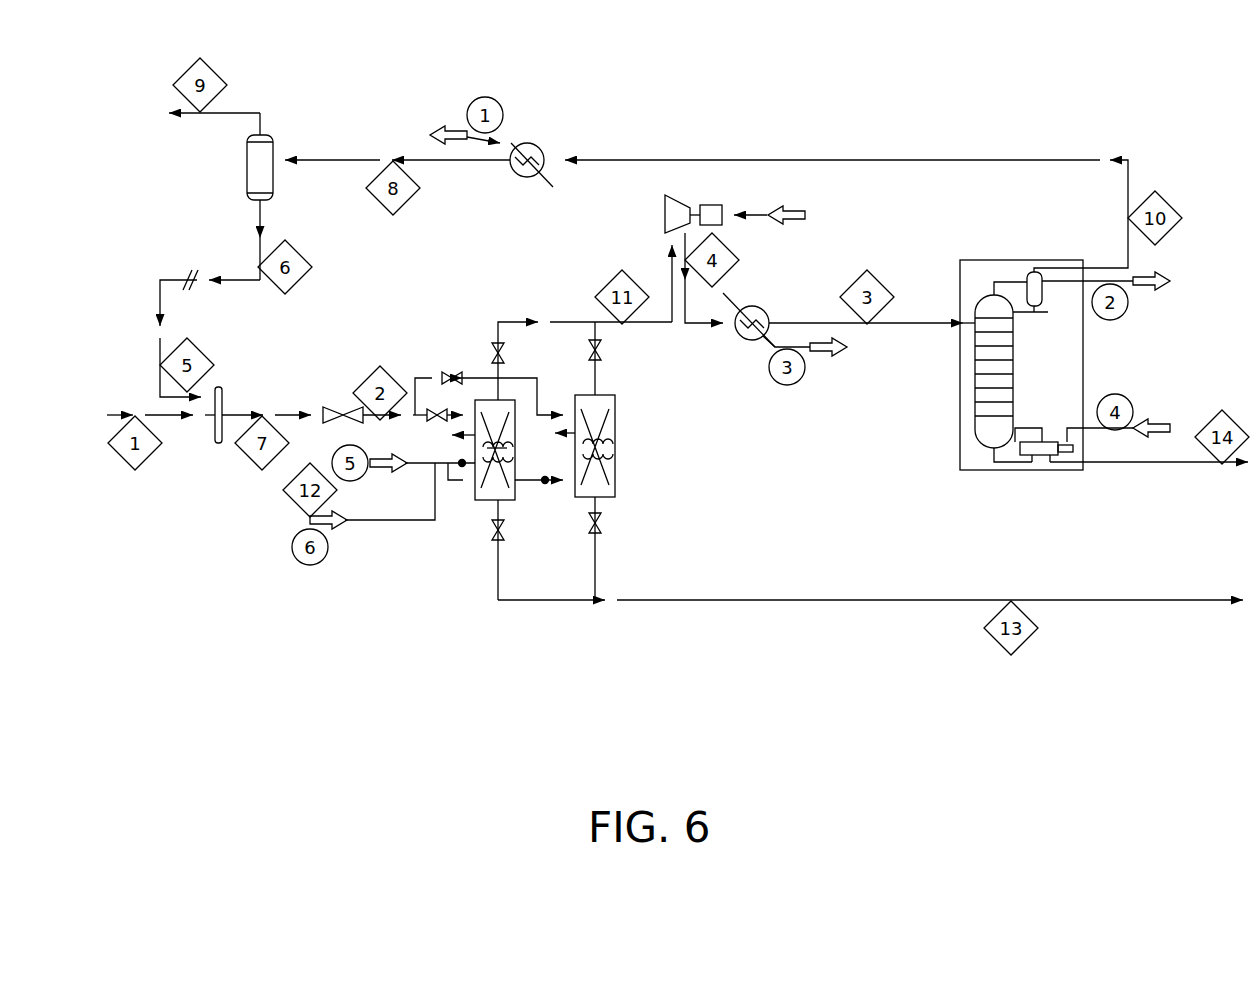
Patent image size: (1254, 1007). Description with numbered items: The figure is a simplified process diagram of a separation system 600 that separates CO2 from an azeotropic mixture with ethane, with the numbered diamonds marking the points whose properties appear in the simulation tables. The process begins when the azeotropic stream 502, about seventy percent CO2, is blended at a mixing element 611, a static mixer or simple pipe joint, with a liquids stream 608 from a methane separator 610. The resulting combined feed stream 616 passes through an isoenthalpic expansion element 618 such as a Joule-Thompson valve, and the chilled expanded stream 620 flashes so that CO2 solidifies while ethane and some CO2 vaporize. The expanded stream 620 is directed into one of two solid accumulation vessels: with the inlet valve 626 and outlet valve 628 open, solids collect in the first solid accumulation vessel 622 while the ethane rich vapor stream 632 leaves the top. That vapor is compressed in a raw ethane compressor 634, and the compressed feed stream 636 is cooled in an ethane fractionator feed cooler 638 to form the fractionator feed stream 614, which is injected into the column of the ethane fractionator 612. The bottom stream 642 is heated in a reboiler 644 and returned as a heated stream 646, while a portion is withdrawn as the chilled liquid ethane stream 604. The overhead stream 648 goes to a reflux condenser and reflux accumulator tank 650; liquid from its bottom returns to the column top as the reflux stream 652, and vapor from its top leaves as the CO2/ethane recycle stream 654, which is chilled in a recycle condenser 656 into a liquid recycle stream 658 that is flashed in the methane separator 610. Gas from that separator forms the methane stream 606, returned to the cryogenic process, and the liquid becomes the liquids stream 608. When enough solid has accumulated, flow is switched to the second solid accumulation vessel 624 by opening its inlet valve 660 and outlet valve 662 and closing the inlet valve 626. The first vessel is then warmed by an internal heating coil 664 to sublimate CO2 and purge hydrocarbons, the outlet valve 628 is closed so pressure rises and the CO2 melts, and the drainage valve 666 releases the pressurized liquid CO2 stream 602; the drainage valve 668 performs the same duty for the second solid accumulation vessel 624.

The separation system 600 is at (646, 782).
The azeotropic stream 502 is at (173, 420).
The CO2 stream 602 is at (1120, 602).
The ethane stream 604 is at (1155, 465).
The methane stream 606 is at (222, 114).
The liquids stream 608 is at (160, 308).
The methane separator 610 is at (247, 175).
The mixing element 611 is at (220, 385).
The ethane fractionator 612 is at (1085, 372).
The fractionator feed stream 614 is at (918, 323).
The combined feed stream 616 is at (234, 414).
The isoenthalpic expansion element 618 is at (328, 408).
The expanded stream 620 is at (370, 418).
The first solid accumulation vessel 622 is at (480, 505).
The second solid accumulation vessel 624 is at (616, 418).
The inlet valve 626 is at (435, 393).
The outlet valve 628 is at (493, 343).
The ethane rich vapor stream 632 is at (643, 323).
The raw ethane compressor 634 is at (664, 208).
The compressed feed stream 636 is at (698, 323).
The ethane fractionator feed cooler 638 is at (750, 306).
The bottom stream 642 is at (1010, 466).
The reboiler 644 is at (1043, 467).
The heated stream 646 is at (1020, 428).
The overhead stream 648 is at (1010, 282).
The reflux accumulator tank 650 is at (1031, 268).
The reflux stream 652 is at (1020, 314).
The CO2/ethane recycle stream 654 is at (895, 162).
The recycle condenser 656 is at (534, 144).
The liquid recycle stream 658 is at (299, 160).
The inlet valve 660 is at (450, 372).
The outlet valve 662 is at (586, 352).
The internal heating coil 664 is at (513, 452).
The drainage valve 666 is at (503, 528).
The drainage valve 668 is at (599, 522).